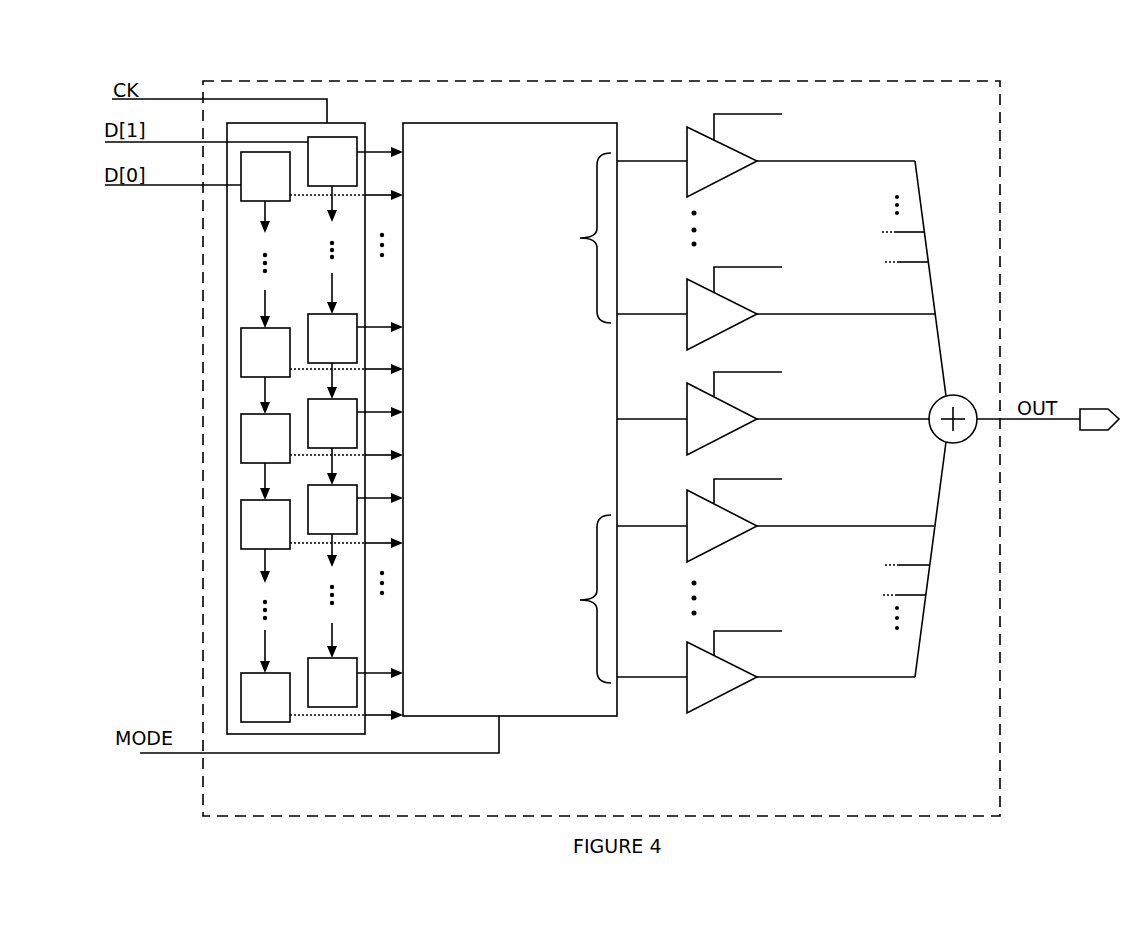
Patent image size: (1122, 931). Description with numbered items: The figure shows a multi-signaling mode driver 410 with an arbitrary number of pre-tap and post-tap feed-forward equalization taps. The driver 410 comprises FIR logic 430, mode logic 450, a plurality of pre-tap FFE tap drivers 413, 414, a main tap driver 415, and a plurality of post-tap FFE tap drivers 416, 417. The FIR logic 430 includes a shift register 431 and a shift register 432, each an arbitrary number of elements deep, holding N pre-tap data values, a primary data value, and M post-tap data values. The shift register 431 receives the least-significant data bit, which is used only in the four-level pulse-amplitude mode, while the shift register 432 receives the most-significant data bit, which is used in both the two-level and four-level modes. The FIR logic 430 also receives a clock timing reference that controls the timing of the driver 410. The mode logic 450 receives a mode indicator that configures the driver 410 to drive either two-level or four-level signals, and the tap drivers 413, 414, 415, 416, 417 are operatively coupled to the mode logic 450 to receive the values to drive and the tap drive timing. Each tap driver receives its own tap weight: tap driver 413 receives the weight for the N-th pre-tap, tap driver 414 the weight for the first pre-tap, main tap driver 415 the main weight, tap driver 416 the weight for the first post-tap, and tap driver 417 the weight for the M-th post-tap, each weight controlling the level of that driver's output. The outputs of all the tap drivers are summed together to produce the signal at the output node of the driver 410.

The driver 410 is at (325, 806).
The FIR logic 430 is at (227, 382).
The shift register 431 is at (254, 728).
The shift register 432 is at (341, 717).
The mode logic 450 is at (529, 151).
The PAM-2 pre-tap FFE tap driver 413 is at (726, 171).
The PAM-2 pre-tap FFE tap driver 414 is at (726, 324).
The main tap driver 415 is at (726, 429).
The PAM-2 post-tap FFE tap driver 416 is at (726, 536).
The PAM-2 post-tap FFE tap driver 417 is at (726, 687).